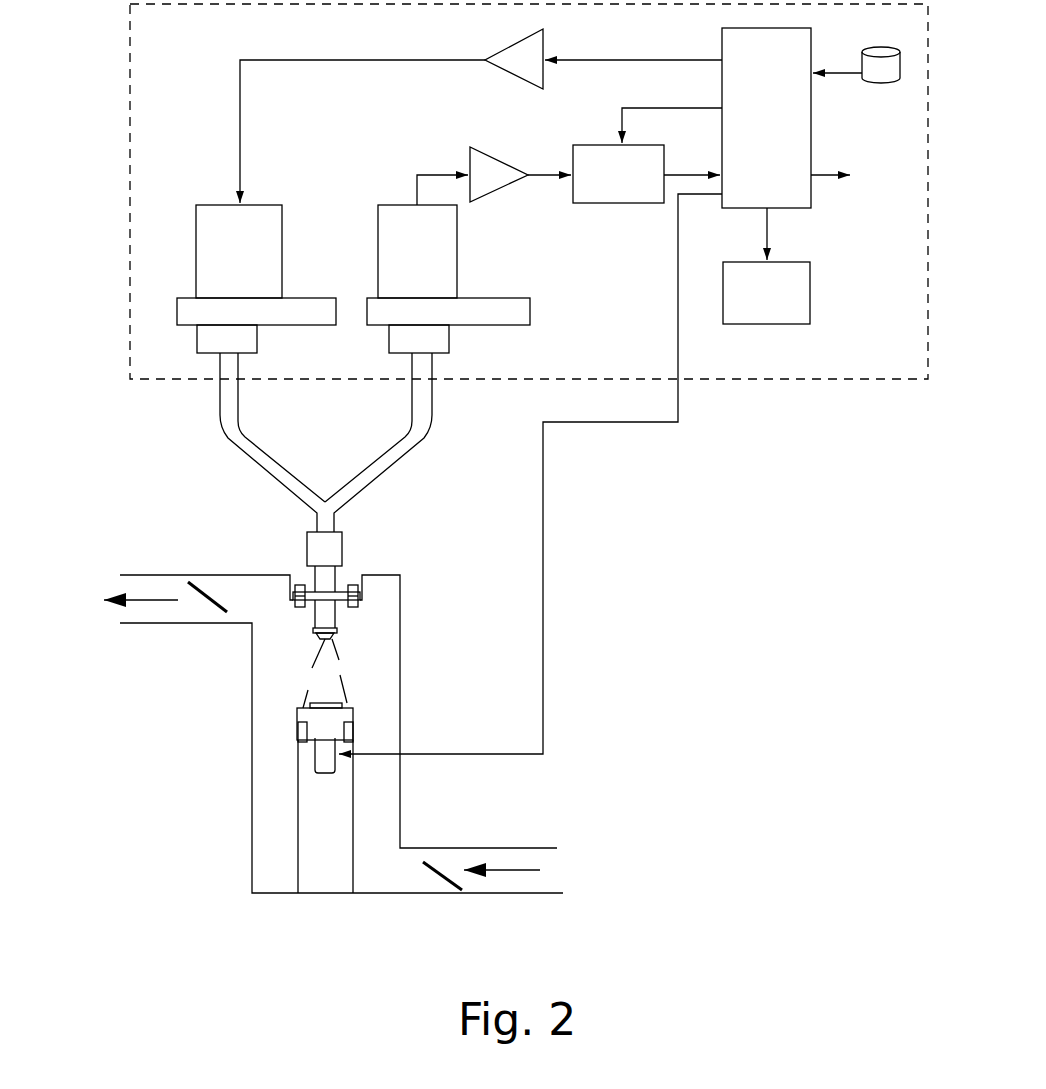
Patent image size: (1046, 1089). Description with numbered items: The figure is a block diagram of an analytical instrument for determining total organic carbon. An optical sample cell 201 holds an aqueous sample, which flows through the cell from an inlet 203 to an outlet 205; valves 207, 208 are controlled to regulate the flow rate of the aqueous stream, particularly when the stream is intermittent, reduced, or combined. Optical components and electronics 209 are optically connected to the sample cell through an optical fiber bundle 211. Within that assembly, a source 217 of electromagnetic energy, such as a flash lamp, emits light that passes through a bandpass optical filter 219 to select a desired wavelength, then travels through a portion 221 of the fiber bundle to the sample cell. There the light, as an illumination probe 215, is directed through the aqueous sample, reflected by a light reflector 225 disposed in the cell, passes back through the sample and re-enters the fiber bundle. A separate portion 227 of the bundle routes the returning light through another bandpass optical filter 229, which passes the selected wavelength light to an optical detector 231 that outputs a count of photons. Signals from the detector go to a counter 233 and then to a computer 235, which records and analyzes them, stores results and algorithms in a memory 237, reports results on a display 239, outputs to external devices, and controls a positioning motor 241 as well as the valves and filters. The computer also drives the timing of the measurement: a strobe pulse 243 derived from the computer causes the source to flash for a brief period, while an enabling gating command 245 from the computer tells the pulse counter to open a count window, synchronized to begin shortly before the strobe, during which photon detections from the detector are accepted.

The optical sample cell 201 is at (250, 722).
The inlet 203 is at (553, 877).
The outlet 205 is at (120, 609).
The valve 207 is at (443, 855).
The valve 208 is at (213, 576).
The optical components and electronics 209 is at (180, 380).
The optical fiber bundle 211 is at (338, 517).
The illumination probe 215 is at (324, 670).
The source 217 is at (218, 200).
The bandpass optical filter 219 is at (185, 297).
The portion of optical fiber assembly 221 is at (247, 426).
The light reflector 225 is at (337, 698).
The separate portion of optical fiber bundle 227 is at (430, 413).
The bandpass optical filter 229 is at (497, 298).
The optical detector 231 is at (387, 200).
The counter 233 is at (602, 205).
The computer 235 is at (812, 131).
The memory 237 is at (886, 49).
The display 239 is at (812, 285).
The positioning motor 241 is at (328, 765).
The strobe pulse 243 is at (660, 57).
The enabling gating command 245 is at (663, 105).